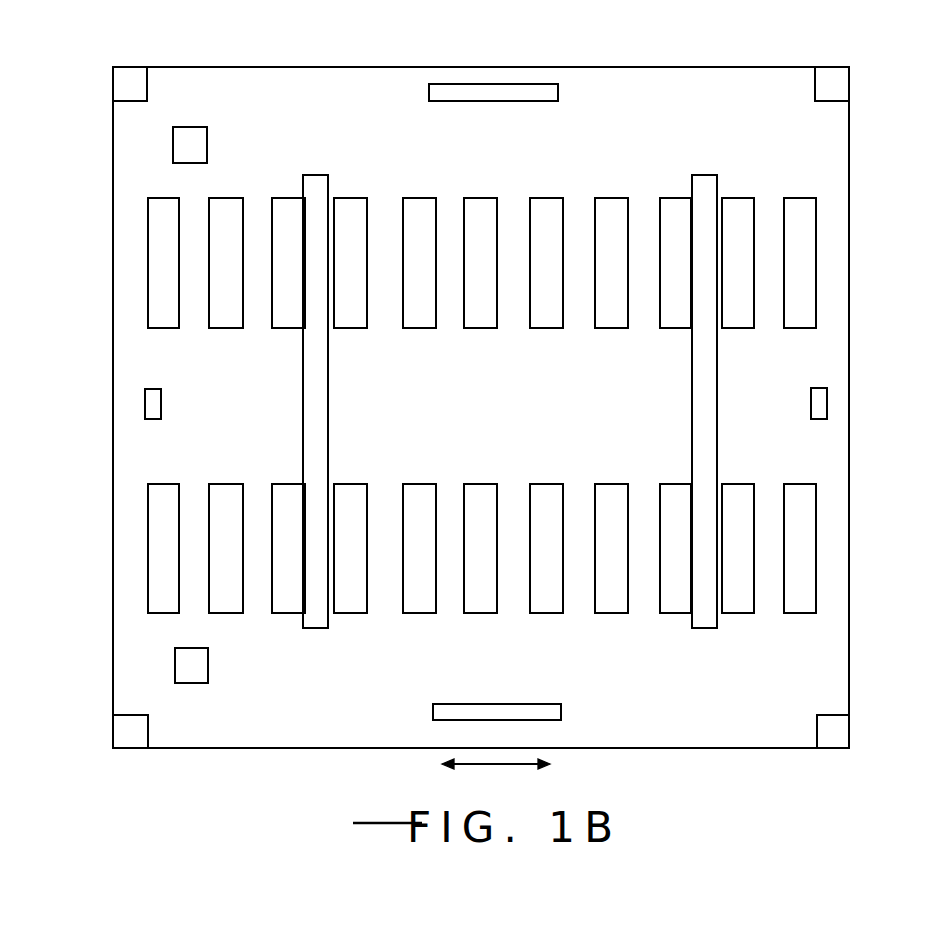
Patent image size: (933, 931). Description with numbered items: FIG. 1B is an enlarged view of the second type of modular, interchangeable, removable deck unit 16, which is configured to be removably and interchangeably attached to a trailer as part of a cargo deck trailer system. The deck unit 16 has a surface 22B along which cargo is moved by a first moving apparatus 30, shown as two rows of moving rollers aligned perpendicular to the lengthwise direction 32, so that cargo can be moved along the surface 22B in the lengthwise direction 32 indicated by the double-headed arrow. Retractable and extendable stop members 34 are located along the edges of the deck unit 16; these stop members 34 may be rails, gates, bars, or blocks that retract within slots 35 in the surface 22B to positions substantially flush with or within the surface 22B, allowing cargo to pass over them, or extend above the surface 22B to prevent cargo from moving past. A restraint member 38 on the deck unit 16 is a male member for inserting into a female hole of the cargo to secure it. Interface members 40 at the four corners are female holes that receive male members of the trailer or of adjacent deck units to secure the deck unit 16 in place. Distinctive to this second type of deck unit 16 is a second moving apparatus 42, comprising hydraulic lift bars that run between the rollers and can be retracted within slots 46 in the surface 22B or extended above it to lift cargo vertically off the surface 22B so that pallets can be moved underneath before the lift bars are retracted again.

The deck unit 16 is at (598, 97).
The surface 22B is at (375, 710).
The first moving apparatus 30 is at (288, 613).
The lengthwise direction 32 is at (480, 768).
The stop members 34 is at (455, 92).
The slots 35 is at (493, 97).
The restraint members 38 is at (167, 667).
The interface members 40 is at (113, 73).
The second moving apparatus 42 is at (328, 415).
The slots 46 is at (328, 378).